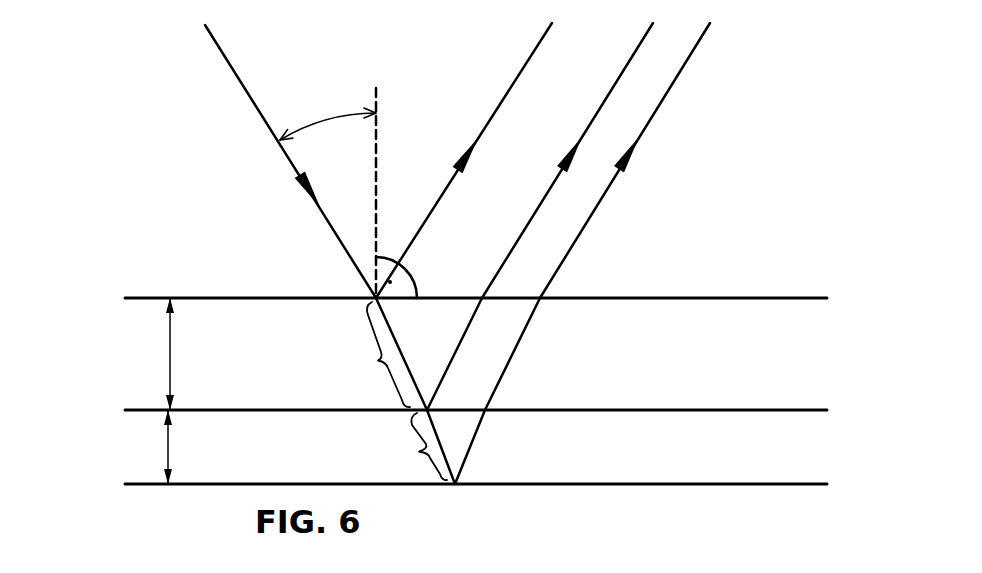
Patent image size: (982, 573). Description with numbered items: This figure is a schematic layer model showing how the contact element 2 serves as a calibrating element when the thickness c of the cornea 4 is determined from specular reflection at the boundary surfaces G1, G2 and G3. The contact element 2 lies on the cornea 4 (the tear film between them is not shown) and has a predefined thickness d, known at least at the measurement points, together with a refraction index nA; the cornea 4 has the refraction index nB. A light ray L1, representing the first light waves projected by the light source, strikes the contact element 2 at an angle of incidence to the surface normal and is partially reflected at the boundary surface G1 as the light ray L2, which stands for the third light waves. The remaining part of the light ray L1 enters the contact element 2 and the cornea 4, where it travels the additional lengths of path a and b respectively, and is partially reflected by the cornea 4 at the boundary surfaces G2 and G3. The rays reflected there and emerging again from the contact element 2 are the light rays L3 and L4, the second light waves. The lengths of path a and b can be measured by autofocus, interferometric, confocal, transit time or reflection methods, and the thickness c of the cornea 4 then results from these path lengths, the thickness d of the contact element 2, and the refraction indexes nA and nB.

The contact element 2 is at (459, 320).
The cornea 4 is at (456, 458).
The light ray L1 is at (229, 62).
The light ray L2 is at (449, 183).
The light ray L3 is at (543, 200).
The light ray L4 is at (601, 200).
The boundary surface G1 is at (125, 298).
The boundary surface G2 is at (125, 410).
The boundary surface G3 is at (125, 484).
The refraction index nA is at (668, 347).
The refraction index nB is at (665, 431).
The thickness d is at (188, 354).
The thickness c is at (186, 447).
The length of path a is at (378, 354).
The length of path b is at (421, 446).